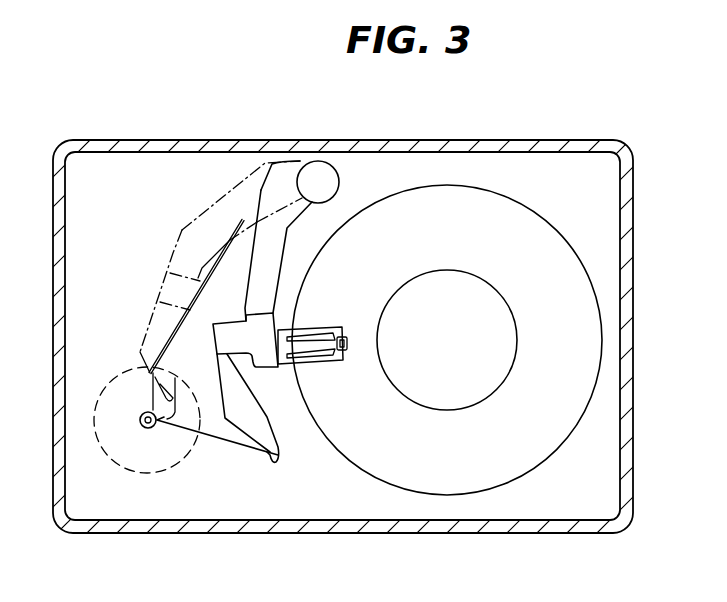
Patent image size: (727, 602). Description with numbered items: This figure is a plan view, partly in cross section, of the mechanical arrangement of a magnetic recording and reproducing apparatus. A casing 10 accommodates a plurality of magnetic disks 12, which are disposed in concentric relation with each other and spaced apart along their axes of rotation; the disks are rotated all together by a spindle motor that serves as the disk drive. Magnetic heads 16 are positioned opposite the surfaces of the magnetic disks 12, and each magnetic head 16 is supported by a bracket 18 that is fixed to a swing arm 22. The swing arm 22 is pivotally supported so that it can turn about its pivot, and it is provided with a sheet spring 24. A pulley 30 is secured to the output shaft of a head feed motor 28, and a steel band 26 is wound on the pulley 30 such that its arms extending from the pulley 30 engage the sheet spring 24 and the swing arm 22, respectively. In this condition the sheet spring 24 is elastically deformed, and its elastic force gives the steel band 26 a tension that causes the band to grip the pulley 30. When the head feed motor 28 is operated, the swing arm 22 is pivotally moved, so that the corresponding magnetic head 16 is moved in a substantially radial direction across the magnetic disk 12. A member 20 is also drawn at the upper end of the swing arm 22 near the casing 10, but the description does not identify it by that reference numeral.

The casing 10 is at (528, 148).
The magnetic disk 12 is at (541, 237).
The magnetic head 16 is at (350, 344).
The bracket 18 is at (308, 350).
The roller pin 20 is at (320, 175).
The swing arm 22 is at (232, 263).
The sheet spring 24 is at (160, 355).
The steel band 26 is at (240, 446).
The head feed motor 28 is at (172, 448).
The pulley 30 is at (142, 430).